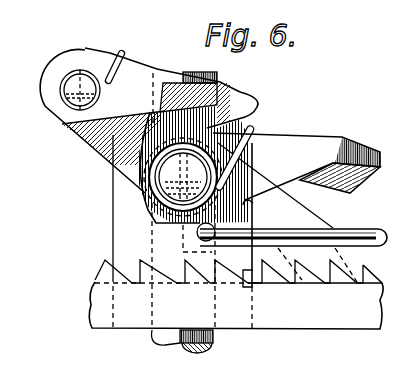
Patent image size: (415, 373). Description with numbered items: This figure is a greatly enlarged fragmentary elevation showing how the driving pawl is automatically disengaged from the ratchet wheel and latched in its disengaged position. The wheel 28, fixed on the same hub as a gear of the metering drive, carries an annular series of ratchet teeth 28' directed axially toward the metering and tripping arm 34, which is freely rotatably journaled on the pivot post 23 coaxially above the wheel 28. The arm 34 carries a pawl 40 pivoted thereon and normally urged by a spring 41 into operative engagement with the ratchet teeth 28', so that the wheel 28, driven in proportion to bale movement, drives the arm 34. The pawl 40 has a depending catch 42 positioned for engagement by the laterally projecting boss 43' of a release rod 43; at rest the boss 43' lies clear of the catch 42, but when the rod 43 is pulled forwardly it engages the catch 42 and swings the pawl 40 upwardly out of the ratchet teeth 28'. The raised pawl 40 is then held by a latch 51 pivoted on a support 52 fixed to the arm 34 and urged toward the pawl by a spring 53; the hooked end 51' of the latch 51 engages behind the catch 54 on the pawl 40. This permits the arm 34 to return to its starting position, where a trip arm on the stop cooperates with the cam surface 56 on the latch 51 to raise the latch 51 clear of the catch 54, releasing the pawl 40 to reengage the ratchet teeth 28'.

The latch 51 is at (167, 126).
The catch 54 is at (180, 82).
The hooked end 51' is at (246, 100).
The cam surface 56 is at (257, 99).
The pawl 40 is at (349, 137).
The spring 53 is at (118, 77).
The support 52 is at (97, 154).
The spring 41 is at (259, 151).
The metering and tripping arm 34 is at (160, 181).
The depending catch 42 is at (246, 206).
The release rod 43 is at (293, 225).
The laterally projecting boss 43' is at (147, 234).
The ratchet teeth 28' is at (88, 268).
The wheel 28 is at (236, 294).
The pivot post 23 is at (176, 346).